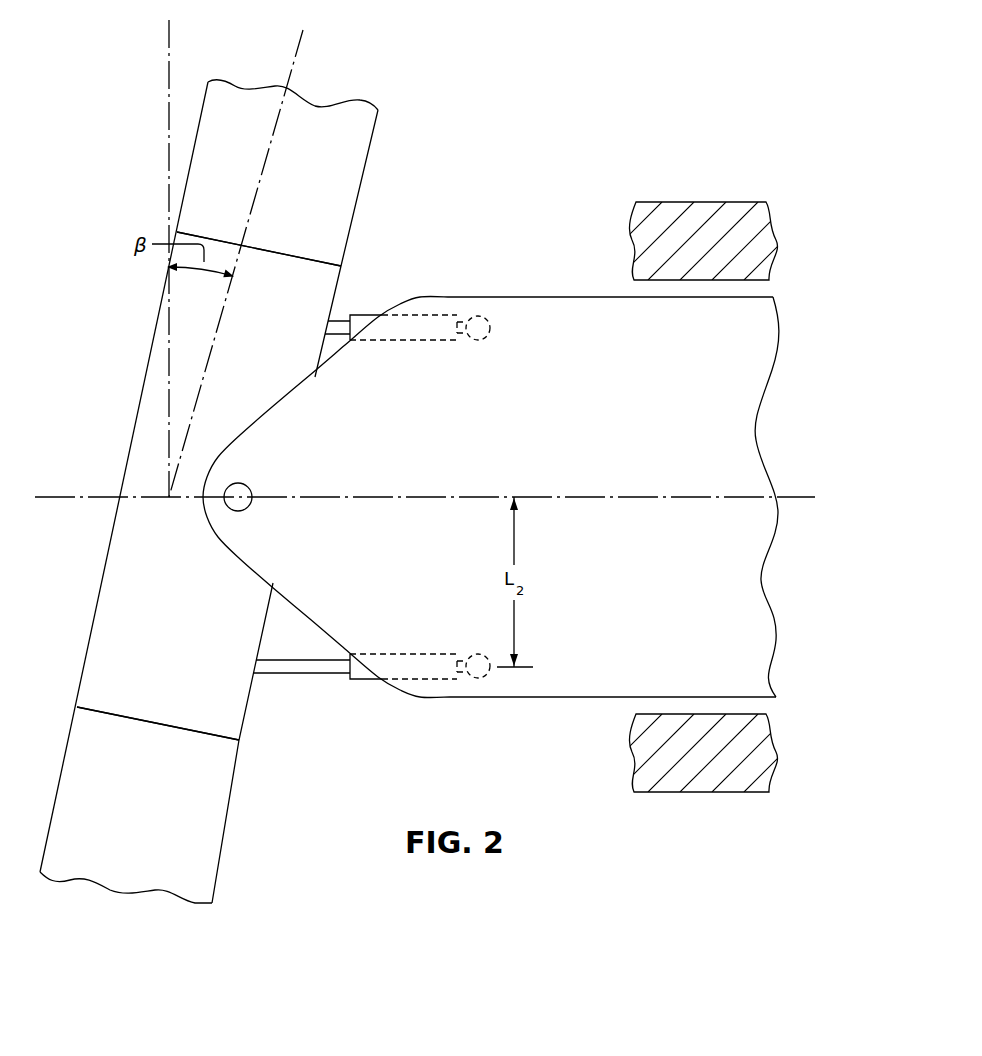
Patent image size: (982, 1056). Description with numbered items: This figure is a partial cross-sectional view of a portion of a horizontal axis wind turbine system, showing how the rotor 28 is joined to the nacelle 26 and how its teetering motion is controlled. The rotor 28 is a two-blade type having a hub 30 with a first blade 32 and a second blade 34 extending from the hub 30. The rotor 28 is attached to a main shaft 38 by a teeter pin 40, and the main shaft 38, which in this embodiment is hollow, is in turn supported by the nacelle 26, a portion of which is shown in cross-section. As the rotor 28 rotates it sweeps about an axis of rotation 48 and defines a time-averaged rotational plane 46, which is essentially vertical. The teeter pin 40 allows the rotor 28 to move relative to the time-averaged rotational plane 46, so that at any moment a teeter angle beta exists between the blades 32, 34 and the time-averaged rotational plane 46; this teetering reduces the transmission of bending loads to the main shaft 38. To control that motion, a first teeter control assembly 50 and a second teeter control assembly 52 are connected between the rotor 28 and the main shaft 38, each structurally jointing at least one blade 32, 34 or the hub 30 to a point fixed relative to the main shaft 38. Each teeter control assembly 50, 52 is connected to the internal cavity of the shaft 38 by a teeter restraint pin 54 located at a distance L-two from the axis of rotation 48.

The nacelle 26 is at (697, 202).
The rotor 28 is at (88, 680).
The hub 30 is at (183, 672).
The first blade 32 is at (325, 194).
The second blade 34 is at (158, 824).
The main shaft 38 is at (605, 447).
The teeter pin 40 is at (240, 500).
The time-averaged rotational plane 46 is at (169, 72).
The axis of rotation 48 is at (300, 45).
The first teeter control assembly 50 is at (368, 315).
The second teeter control assembly 52 is at (293, 676).
The teeter restraint pin 54 is at (478, 328).